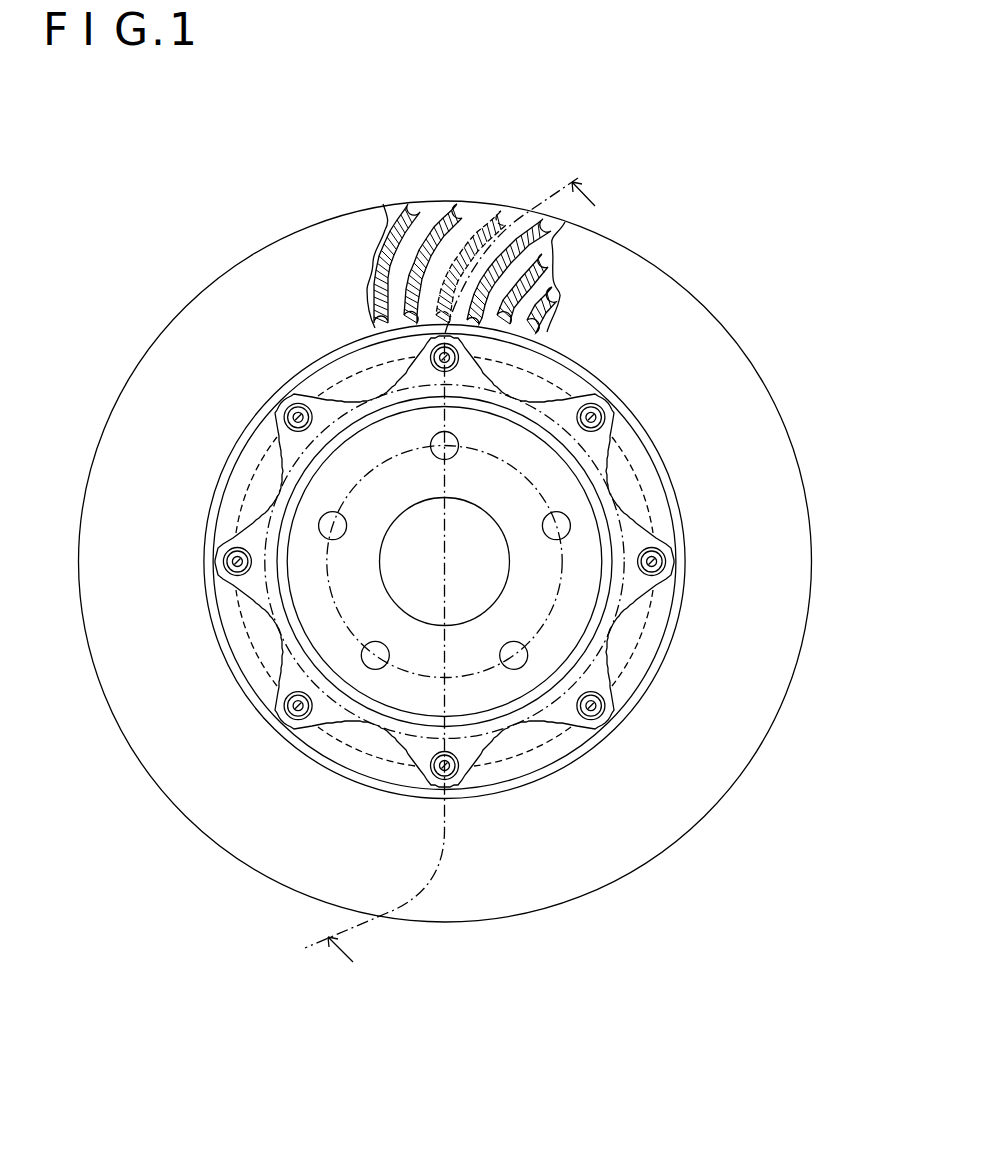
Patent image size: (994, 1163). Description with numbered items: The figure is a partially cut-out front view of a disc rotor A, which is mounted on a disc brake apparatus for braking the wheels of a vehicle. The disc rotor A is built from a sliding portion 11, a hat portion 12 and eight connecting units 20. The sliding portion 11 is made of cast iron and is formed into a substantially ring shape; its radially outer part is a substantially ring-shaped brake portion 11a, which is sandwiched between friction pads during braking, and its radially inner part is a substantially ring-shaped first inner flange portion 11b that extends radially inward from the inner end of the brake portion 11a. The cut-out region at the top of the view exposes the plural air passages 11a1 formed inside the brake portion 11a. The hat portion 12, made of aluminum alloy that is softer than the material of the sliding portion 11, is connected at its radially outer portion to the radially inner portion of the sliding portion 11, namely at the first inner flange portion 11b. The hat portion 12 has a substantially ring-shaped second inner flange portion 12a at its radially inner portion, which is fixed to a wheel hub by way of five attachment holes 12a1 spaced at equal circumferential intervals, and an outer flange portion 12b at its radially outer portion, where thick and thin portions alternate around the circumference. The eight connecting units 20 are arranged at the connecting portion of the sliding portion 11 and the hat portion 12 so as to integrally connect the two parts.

The disc rotor A is at (651, 254).
The sliding portion 11 is at (174, 320).
The brake portion 11a is at (738, 352).
The air passages 11a1 is at (492, 240).
The first inner flange portion 11b is at (571, 763).
The hat portion 12 is at (219, 484).
The second inner flange portion 12a is at (517, 566).
The attachment holes 12a1 is at (503, 651).
The outer flange portion 12b is at (658, 583).
The connecting units 20 is at (658, 548).